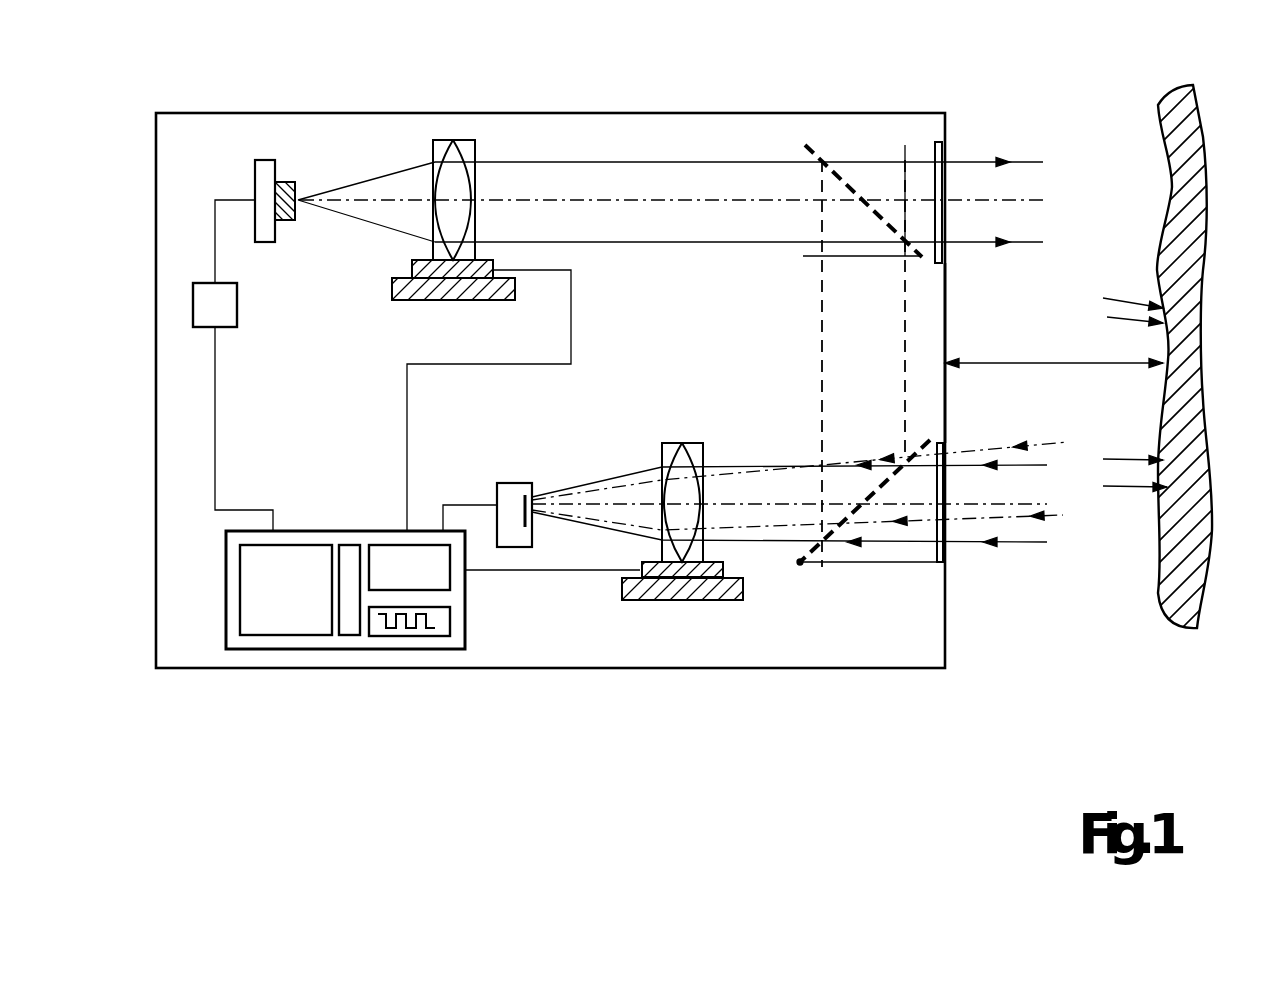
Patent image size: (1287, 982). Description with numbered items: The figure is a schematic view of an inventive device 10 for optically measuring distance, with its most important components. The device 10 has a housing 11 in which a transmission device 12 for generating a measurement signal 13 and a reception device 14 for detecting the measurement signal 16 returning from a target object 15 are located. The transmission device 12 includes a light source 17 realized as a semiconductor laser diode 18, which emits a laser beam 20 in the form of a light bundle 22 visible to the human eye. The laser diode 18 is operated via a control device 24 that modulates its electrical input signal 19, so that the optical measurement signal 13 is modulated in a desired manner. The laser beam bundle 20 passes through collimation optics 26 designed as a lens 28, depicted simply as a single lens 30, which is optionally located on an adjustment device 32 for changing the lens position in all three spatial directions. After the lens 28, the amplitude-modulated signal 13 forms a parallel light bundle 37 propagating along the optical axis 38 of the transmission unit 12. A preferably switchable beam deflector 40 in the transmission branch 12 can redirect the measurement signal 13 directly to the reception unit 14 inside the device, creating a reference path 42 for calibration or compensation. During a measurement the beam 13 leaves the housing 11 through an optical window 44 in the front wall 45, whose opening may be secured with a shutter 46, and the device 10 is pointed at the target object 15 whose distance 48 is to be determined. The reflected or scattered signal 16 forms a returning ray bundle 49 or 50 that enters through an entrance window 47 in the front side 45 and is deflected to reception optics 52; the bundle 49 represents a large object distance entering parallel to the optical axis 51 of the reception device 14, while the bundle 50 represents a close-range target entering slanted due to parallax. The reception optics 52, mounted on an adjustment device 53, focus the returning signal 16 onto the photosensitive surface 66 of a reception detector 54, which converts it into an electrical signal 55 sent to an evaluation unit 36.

The device 10 is at (225, 68).
The housing 11 is at (763, 137).
The transmission device 12 is at (301, 198).
The measurement signal 13 is at (903, 173).
The reception device 14 is at (777, 502).
The target object 15 is at (1157, 233).
The measurement signal 16 is at (1123, 457).
The light source 17 is at (303, 146).
The semiconductor laser diode 18 is at (283, 180).
The electrical input signal 19 is at (217, 190).
The laser beam 20 is at (310, 215).
The light bundle 22 is at (400, 183).
The control device 24 is at (198, 312).
The collimation optics 26 is at (521, 155).
The lens 28 is at (521, 155).
The single lens 30 is at (473, 153).
The adjustment device 32 is at (410, 268).
The evaluation unit 36 is at (348, 640).
The parallel light bundle 37 is at (675, 232).
The optical axis 38 is at (702, 198).
The beam deflector 40 is at (852, 185).
The reference path 42 is at (905, 325).
The optical window 44 is at (943, 148).
The front wall 45 is at (947, 297).
The shutter 46 is at (930, 262).
The entrance window 47 is at (947, 553).
The distance 48 is at (1052, 363).
The returning ray bundle 49 is at (1017, 530).
The returning ray bundle 50 is at (1047, 504).
The optical axis 51 is at (770, 497).
The reception optics 52 is at (697, 450).
The adjustment device 53 is at (733, 568).
The reception detector 54 is at (513, 497).
The electrical signal 55 is at (465, 503).
The photosensitive surface 66 is at (523, 523).